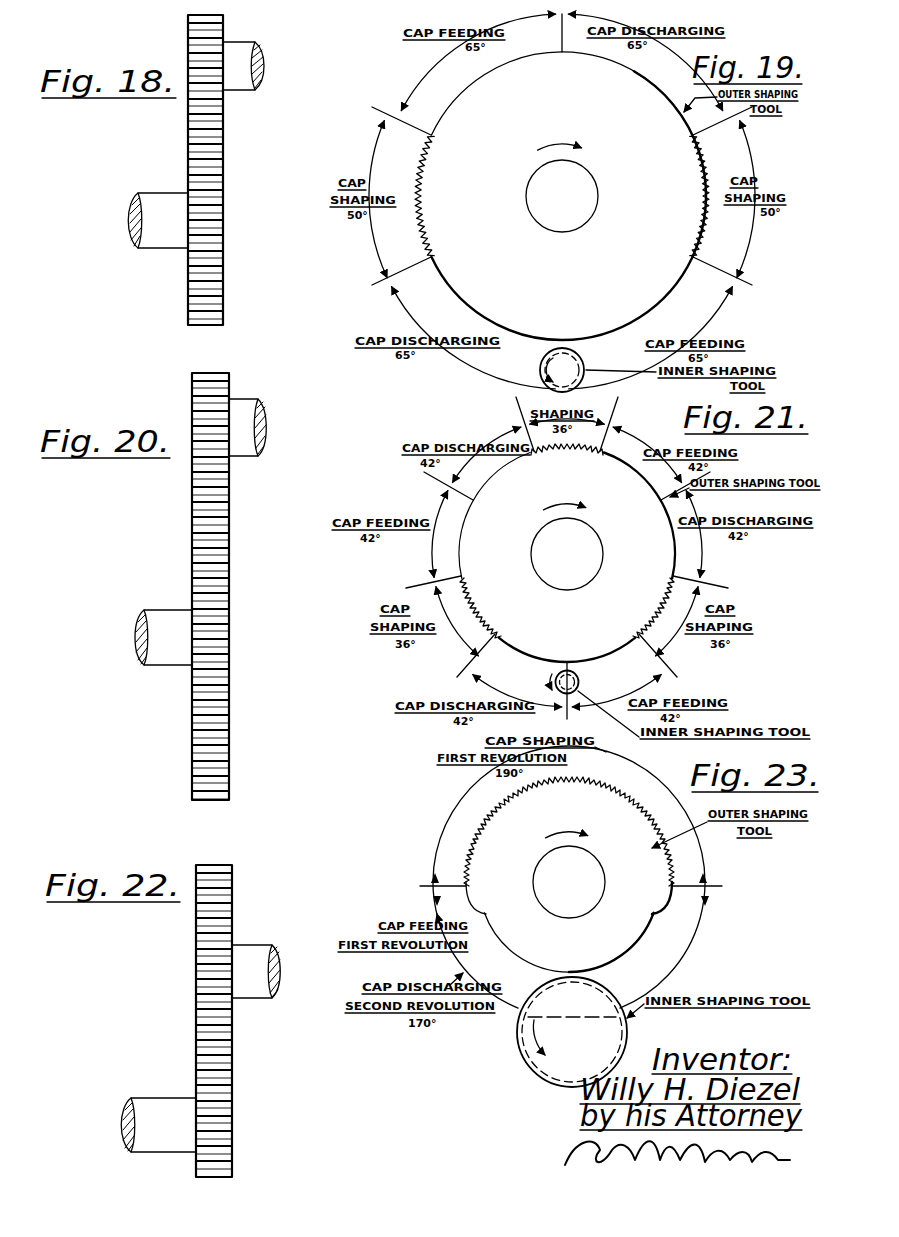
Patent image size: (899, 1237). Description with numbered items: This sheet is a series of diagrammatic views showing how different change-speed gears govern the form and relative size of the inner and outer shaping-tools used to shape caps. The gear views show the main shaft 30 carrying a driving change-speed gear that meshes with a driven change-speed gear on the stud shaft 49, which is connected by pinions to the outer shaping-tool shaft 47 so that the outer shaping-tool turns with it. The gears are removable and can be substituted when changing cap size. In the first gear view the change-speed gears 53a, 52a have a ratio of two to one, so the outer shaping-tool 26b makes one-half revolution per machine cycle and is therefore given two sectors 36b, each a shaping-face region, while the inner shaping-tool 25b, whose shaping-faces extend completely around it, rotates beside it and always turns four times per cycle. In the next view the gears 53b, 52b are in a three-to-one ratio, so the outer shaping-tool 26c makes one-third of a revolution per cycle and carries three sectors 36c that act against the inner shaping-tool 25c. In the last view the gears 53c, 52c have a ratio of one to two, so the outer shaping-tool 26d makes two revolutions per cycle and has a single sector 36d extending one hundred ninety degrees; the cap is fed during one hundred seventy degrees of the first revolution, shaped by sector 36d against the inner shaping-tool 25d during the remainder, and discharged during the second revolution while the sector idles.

In FIG. 18, the change-speed gear 52a is at (225, 297).
In FIG. 18, the change-speed gear 53a is at (187, 35).
In FIG. 18, the main shaft 30 is at (262, 48).
In FIG. 20, the main shaft 30 is at (264, 448).
In FIG. 22, the main shaft 30 is at (278, 945).
In FIG. 18, the stud shaft 49 is at (130, 237).
In FIG. 20, the stud shaft 49 is at (148, 664).
In FIG. 22, the stud shaft 49 is at (143, 1105).
In FIG. 19, the outer shaping-tool 26b is at (569, 196).
In FIG. 19, the sector 36b is at (562, 195).
In FIG. 19, the outer shaping-tool shaft 47 is at (562, 196).
In FIG. 21, the outer shaping-tool shaft 47 is at (567, 554).
In FIG. 23, the outer shaping-tool shaft 47 is at (569, 882).
In FIG. 19, the inner shaping-tool 25b is at (539, 371).
In FIG. 20, the change-speed gear 52b is at (229, 746).
In FIG. 20, the change-speed gear 53b is at (231, 375).
In FIG. 21, the outer shaping-tool 26c is at (567, 557).
In FIG. 21, the sector 36c is at (567, 541).
In FIG. 21, the inner shaping-tool 25c is at (580, 681).
In FIG. 22, the change-speed gear 52c is at (232, 1135).
In FIG. 22, the change-speed gear 53c is at (195, 941).
In FIG. 23, the outer shaping-tool 26d is at (569, 878).
In FIG. 23, the sector 36d is at (490, 853).
In FIG. 23, the inner shaping-tool 25d is at (519, 1047).